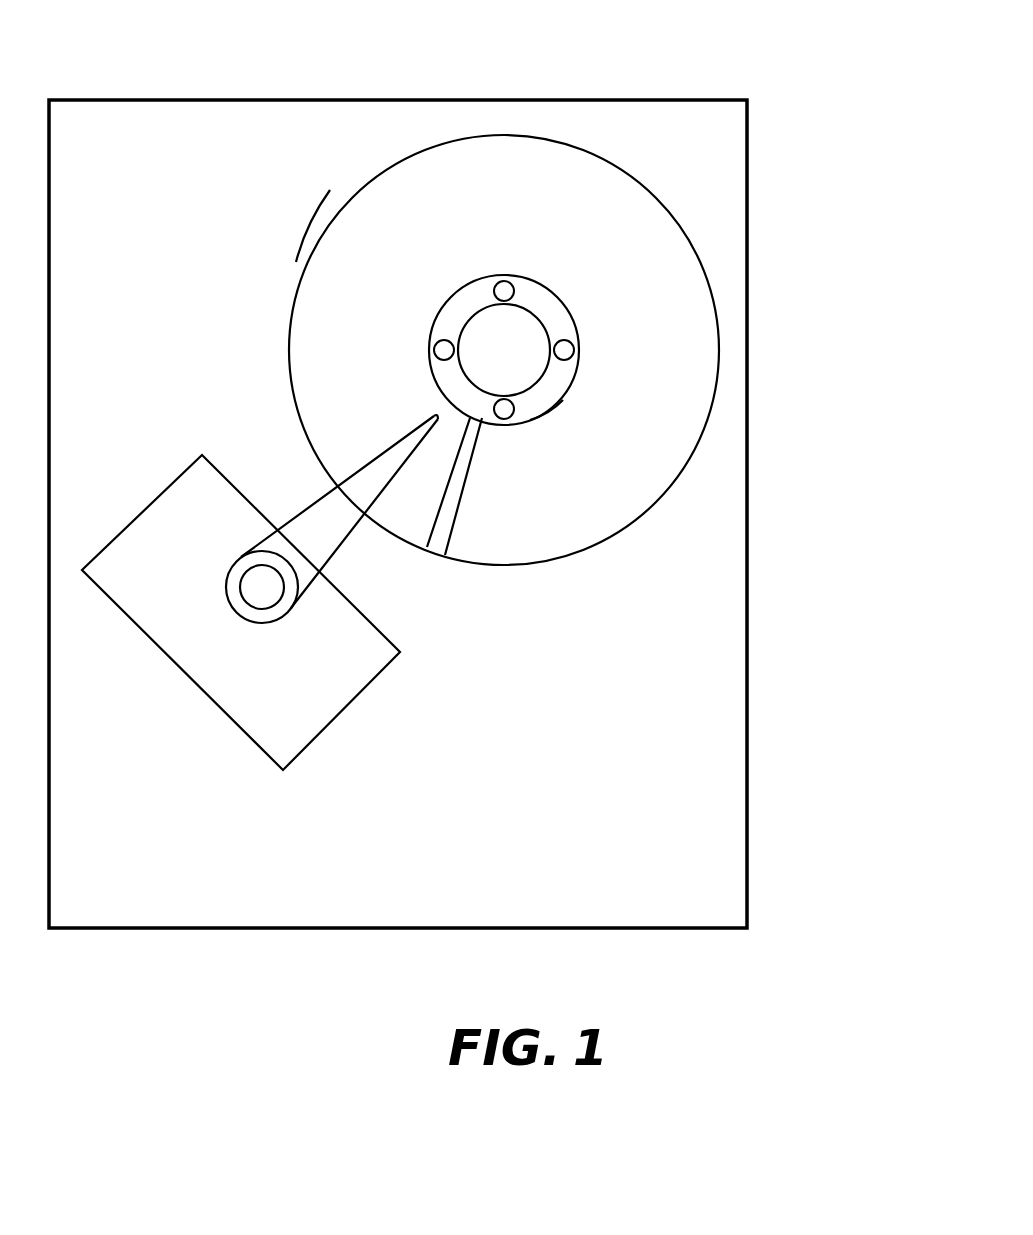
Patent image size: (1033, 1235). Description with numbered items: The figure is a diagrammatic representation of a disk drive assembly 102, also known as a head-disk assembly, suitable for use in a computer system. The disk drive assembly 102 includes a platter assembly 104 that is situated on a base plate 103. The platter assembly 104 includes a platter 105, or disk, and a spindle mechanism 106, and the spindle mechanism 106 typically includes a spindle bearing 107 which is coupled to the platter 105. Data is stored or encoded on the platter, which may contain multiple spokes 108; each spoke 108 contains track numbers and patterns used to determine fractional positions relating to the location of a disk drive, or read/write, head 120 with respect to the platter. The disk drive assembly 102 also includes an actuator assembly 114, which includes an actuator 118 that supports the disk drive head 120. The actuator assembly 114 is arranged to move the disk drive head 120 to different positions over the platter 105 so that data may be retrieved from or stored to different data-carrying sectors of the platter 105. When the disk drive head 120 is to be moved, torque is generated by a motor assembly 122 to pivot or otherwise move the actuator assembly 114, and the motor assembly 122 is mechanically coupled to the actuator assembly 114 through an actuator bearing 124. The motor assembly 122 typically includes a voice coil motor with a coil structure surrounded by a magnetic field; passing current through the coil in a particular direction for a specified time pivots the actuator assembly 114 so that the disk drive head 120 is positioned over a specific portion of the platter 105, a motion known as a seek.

The disk drive assembly 102 is at (770, 66).
The base plate 103 is at (747, 736).
The platter assembly 104 is at (592, 588).
The platter 105 is at (320, 272).
The spindle mechanism 106 is at (552, 250).
The spindle bearing 107 is at (563, 400).
The spoke 108 is at (440, 540).
The actuator assembly 114 is at (213, 368).
The actuator 118 is at (318, 517).
The disk drive head 120 is at (435, 425).
The motor assembly 122 is at (263, 720).
The actuator bearing 124 is at (245, 600).